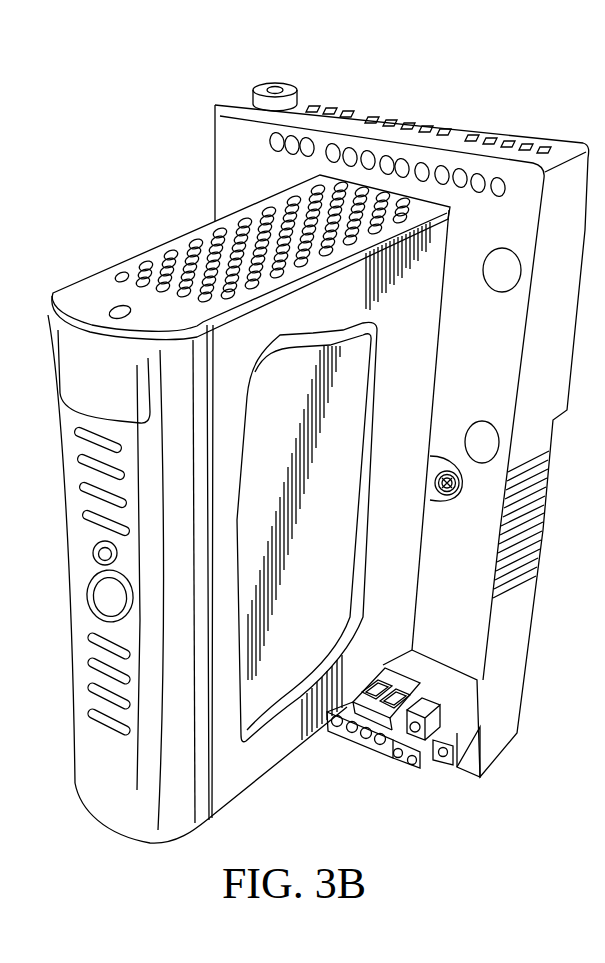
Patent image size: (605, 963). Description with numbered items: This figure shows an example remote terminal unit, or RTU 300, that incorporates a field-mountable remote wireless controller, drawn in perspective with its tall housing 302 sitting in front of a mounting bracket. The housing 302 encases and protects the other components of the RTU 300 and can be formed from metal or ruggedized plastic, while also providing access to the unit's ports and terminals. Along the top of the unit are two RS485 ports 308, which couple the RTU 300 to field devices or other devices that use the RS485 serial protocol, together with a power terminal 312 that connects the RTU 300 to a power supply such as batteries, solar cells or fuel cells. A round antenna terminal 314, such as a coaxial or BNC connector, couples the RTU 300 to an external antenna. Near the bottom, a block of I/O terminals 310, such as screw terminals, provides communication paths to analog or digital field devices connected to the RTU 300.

The remote terminal unit 300 is at (140, 116).
The housing 302 is at (105, 280).
The RS485 ports 308 is at (570, 134).
The I/O terminals 310 is at (375, 782).
The power terminal 312 is at (306, 78).
The antenna terminal 314 is at (262, 85).